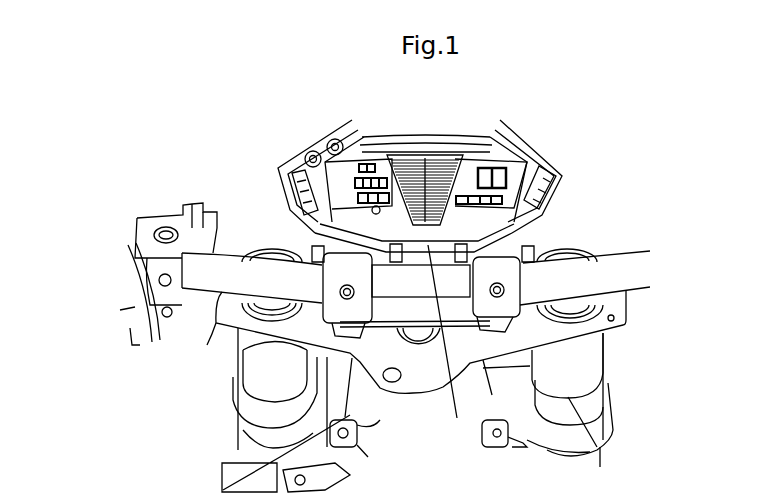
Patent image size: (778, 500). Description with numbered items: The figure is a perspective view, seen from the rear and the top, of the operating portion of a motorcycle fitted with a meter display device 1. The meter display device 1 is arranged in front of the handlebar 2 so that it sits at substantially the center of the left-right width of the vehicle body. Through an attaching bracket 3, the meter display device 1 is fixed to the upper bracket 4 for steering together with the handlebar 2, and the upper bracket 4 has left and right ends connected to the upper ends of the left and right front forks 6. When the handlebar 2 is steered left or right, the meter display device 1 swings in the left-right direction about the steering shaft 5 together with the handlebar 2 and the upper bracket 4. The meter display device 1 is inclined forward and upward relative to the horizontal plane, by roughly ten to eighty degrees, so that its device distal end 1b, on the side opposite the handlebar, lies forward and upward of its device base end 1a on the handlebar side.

The meter display device 1 is at (589, 149).
The device base end 1a is at (447, 345).
The device distal end 1b is at (420, 135).
The handlebar 2 is at (228, 281).
The attaching bracket 3 is at (500, 268).
The upper bracket 4 is at (603, 374).
The steering shaft 5 is at (415, 330).
The front forks 6 is at (257, 385).